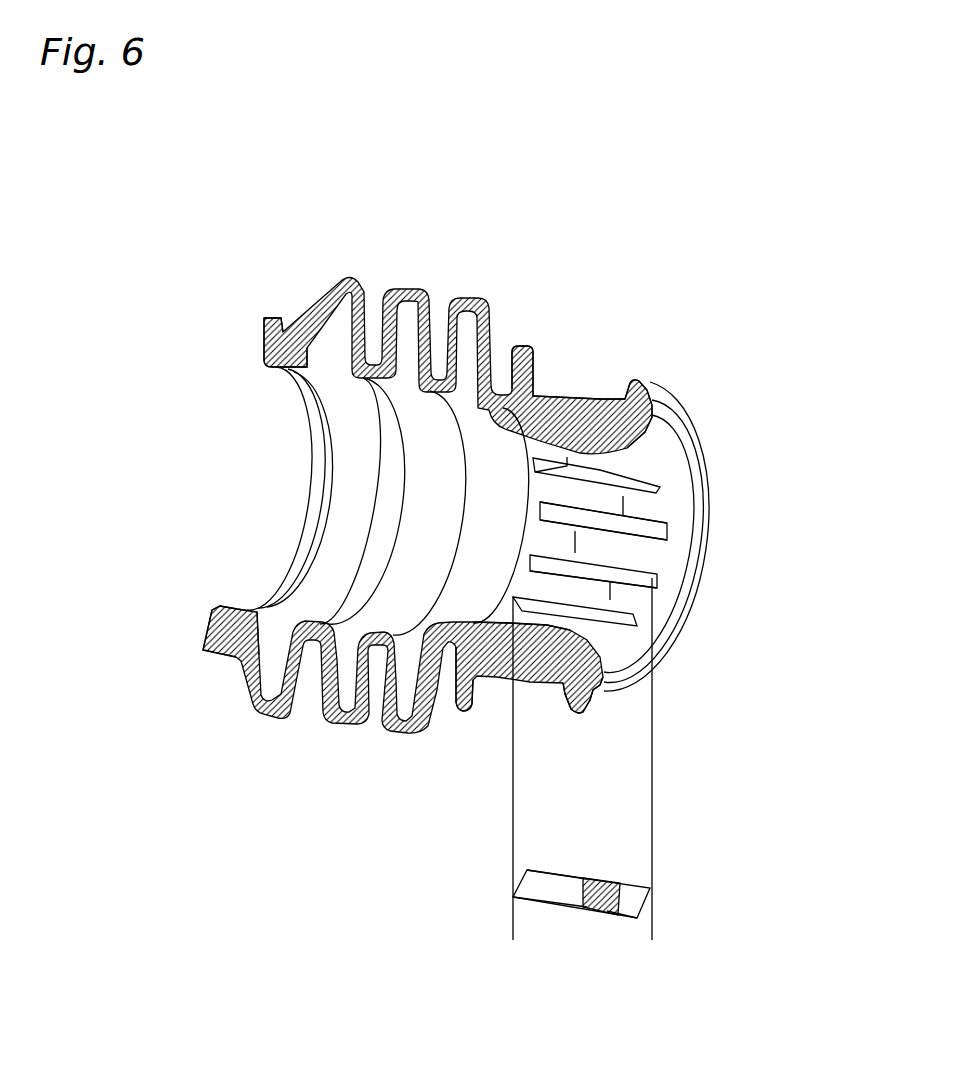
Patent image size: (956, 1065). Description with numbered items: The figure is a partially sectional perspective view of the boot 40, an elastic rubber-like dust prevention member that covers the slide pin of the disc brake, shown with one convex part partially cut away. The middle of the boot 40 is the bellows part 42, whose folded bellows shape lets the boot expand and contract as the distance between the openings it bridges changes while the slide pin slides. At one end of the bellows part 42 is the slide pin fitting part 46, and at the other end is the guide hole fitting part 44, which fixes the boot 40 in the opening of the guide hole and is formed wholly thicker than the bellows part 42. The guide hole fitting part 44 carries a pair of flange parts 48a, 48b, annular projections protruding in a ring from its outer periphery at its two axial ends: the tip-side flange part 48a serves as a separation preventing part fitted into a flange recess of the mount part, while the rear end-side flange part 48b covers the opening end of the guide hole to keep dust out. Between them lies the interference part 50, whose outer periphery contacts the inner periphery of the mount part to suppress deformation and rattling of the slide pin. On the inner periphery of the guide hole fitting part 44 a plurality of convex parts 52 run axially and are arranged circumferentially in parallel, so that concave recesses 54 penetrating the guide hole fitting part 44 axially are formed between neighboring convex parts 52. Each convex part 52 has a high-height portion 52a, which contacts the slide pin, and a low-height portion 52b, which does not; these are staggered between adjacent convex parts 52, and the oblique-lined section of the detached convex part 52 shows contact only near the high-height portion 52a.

The boot 40 is at (510, 278).
The bellows part 42 is at (357, 292).
The guide hole fitting part 44 is at (683, 388).
The slide pin fitting part 46 is at (284, 330).
The flange part 48a is at (637, 382).
The flange part 48b is at (529, 347).
The interference part 50 is at (575, 390).
The convex part 52 is at (680, 502).
The high-height portion 52a is at (630, 510).
The low-height portion 52b is at (567, 493).
The concave recess 54 is at (663, 533).